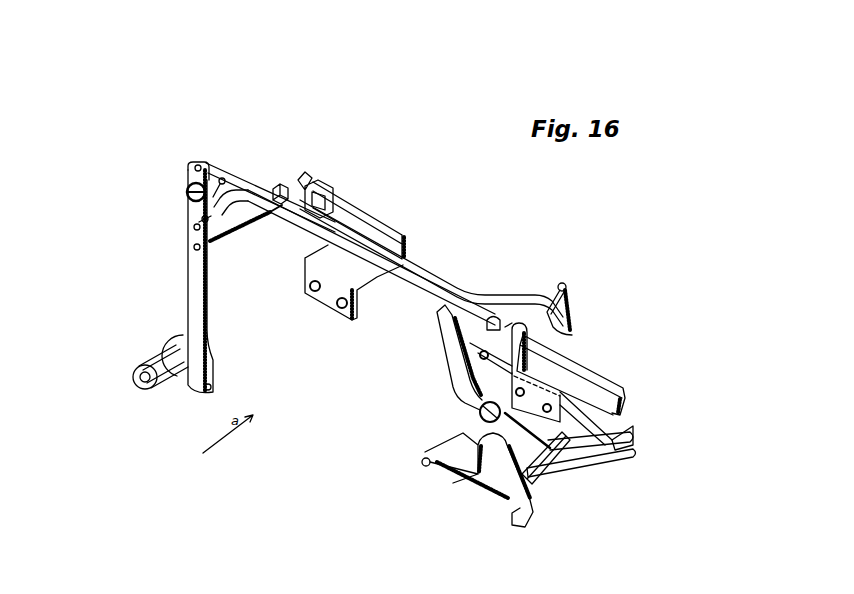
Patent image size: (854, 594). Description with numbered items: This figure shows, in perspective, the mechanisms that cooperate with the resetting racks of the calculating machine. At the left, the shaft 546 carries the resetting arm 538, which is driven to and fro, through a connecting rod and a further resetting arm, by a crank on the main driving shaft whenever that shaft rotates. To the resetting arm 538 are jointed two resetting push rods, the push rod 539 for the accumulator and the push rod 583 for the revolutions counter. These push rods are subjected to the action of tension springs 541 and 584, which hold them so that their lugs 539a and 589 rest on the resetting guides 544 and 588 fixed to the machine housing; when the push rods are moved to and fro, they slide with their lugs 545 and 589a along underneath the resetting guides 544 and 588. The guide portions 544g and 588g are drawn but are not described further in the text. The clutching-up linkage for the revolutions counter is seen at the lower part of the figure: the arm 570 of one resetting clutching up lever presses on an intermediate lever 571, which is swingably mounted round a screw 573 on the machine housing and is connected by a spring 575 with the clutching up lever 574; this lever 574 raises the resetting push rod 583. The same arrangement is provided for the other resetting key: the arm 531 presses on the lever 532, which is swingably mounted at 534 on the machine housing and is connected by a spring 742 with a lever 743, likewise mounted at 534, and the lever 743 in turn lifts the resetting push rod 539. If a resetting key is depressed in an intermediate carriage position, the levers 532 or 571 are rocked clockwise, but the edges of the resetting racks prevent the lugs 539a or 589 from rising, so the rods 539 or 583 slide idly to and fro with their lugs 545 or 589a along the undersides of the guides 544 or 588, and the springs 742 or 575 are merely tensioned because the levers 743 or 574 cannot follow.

The resetting arm 538 is at (197, 320).
The shaft 546 is at (170, 385).
The tension spring 541 is at (200, 222).
The resetting push rod 539 is at (213, 170).
The lug 545 is at (280, 182).
The tension spring 584 is at (237, 231).
The resetting push rod 583 is at (412, 283).
The lug 539a is at (312, 180).
The guide rail 544g is at (360, 212).
The resetting guide 544 is at (406, 236).
The pivot 534 is at (457, 362).
The lug 589a is at (489, 318).
The lug 589 is at (521, 325).
The lever 743 is at (547, 297).
The spring 742 is at (572, 317).
The guide bar 588g is at (582, 367).
The resetting guide 588 is at (623, 401).
The arm 531 is at (633, 433).
The lever 532 is at (636, 453).
The intermediate lever 571 is at (580, 479).
The arm 570 is at (547, 472).
The screw 573 is at (480, 410).
The clutching up lever 574 is at (467, 424).
The spring 575 is at (460, 486).